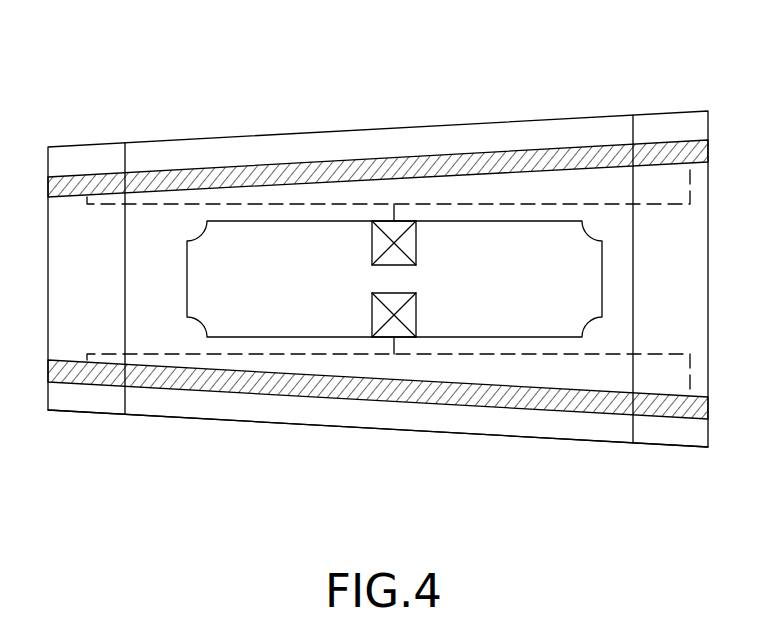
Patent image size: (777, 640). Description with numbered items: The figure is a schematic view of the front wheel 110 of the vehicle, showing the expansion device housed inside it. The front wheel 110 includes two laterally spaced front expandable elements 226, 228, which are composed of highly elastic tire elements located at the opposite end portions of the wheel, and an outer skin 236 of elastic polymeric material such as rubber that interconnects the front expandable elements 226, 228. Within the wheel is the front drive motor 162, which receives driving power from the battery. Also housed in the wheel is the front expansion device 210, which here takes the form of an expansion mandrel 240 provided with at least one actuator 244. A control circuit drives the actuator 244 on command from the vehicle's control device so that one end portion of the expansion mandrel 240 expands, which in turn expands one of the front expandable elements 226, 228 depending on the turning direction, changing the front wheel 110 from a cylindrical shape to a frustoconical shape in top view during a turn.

The front wheel 110 is at (134, 442).
The front drive motor 162 is at (248, 230).
The front expansion device 210 is at (462, 407).
The front expandable element 226 is at (80, 400).
The front expandable element 228 is at (678, 428).
The outer skin 236 is at (380, 128).
The expansion mandrel 240 is at (233, 393).
The actuator 244 is at (416, 250).